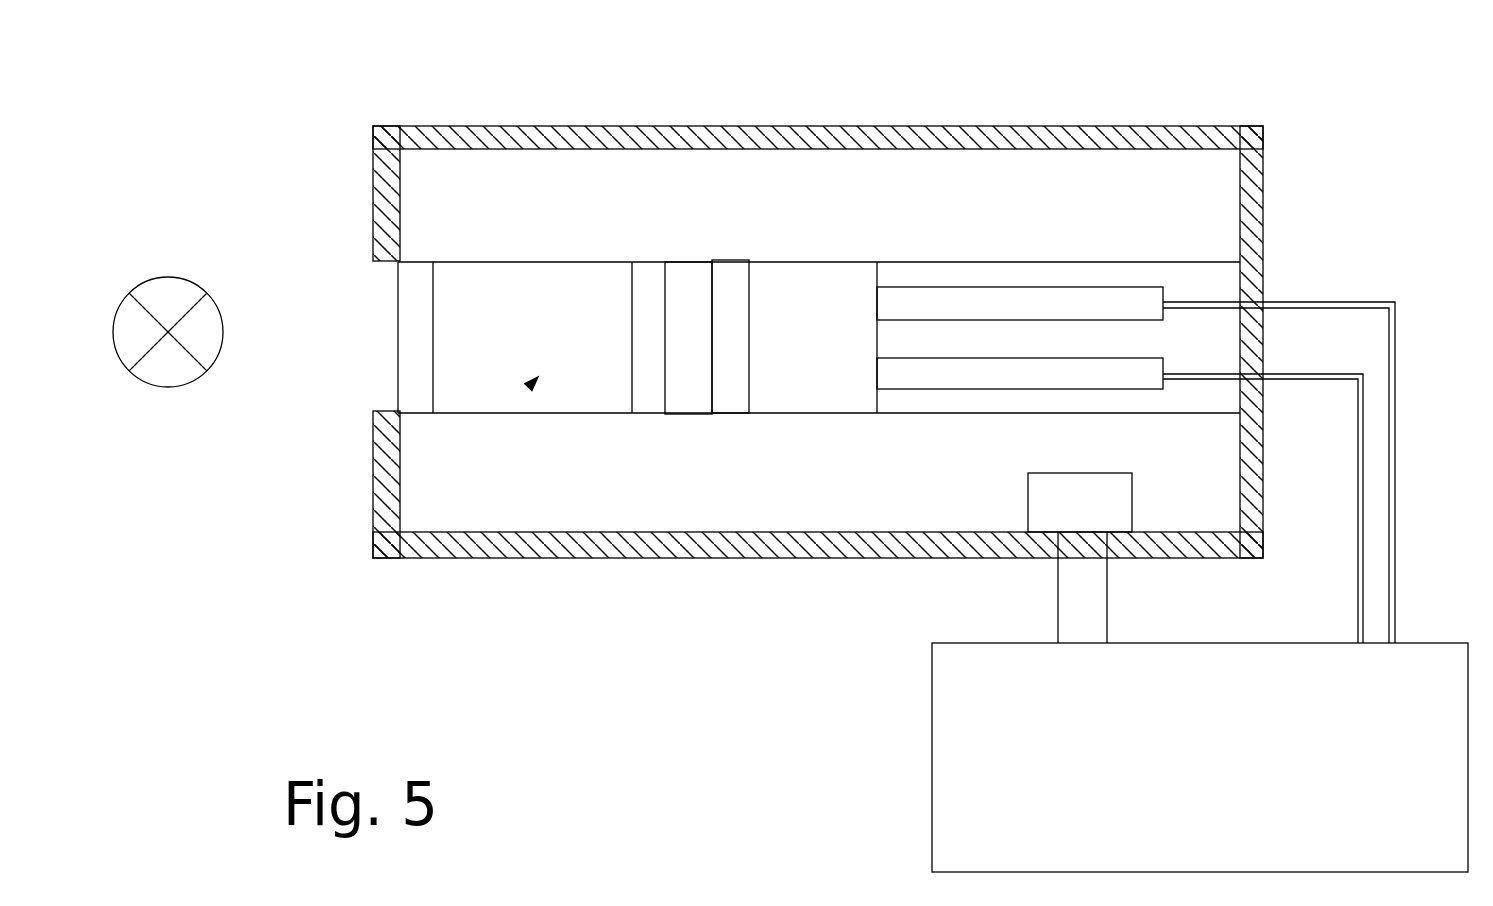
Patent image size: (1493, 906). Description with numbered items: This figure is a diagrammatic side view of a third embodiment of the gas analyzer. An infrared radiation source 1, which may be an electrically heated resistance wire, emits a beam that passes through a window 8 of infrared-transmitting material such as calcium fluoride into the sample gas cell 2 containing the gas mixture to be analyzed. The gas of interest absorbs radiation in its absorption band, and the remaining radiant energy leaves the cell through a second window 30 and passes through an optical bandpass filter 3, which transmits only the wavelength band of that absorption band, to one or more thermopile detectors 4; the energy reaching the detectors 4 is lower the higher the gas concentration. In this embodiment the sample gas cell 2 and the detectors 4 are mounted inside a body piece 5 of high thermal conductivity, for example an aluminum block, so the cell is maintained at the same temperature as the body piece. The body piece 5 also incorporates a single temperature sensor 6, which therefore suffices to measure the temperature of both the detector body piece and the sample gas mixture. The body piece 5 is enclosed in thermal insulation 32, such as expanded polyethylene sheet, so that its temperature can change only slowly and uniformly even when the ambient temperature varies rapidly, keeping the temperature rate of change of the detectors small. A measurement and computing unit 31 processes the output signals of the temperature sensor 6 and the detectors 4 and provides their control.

The infrared radiation source 1 is at (208, 290).
The sample gas cell 2 is at (538, 377).
The optical bandpass filter 3 is at (749, 387).
The thermopile detector 4 is at (1163, 365).
The body piece 5 is at (818, 302).
The temperature sensor 6 is at (1053, 535).
The window 8 is at (397, 318).
The window 30 is at (665, 375).
The measurement and computing unit 31 is at (932, 773).
The thermal insulation 32 is at (732, 128).